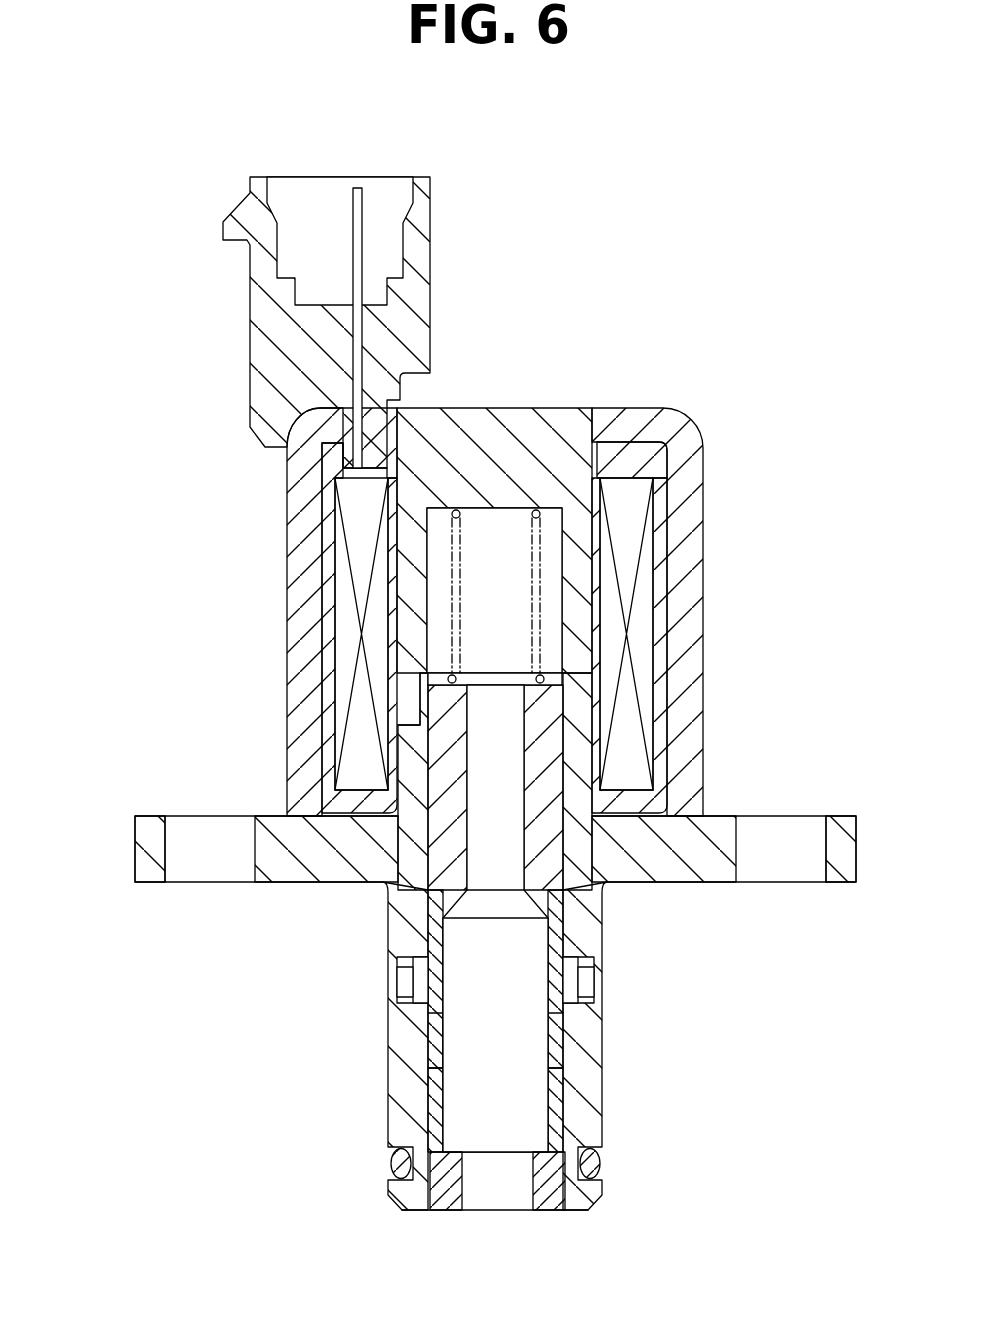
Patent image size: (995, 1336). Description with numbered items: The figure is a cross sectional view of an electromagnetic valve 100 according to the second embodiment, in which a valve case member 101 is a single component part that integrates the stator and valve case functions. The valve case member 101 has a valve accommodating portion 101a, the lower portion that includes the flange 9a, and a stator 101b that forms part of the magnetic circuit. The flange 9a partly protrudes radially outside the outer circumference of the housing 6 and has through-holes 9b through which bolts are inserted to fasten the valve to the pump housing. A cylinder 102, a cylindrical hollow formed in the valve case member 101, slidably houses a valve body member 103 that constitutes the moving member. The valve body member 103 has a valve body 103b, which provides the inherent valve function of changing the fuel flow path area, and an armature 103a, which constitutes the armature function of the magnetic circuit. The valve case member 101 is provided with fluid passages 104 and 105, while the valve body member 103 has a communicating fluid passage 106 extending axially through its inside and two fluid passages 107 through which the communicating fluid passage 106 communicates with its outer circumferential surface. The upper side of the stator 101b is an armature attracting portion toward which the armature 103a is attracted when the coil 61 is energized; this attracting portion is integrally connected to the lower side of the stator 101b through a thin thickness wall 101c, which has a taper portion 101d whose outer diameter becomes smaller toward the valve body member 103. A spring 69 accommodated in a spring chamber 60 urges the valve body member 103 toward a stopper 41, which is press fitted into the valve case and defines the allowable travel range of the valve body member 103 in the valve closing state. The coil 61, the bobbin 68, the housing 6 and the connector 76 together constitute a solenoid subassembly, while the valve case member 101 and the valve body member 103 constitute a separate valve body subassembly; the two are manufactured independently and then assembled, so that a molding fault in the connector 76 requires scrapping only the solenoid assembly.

The electromagnetic valve 100 is at (201, 381).
The connector 76 is at (430, 304).
The stator 101b is at (557, 408).
The bobbin 68 is at (665, 462).
The housing 6 is at (705, 470).
The spring 69 is at (440, 552).
The spring chamber 60 is at (470, 605).
The coil 61 is at (625, 552).
The taper portion 101d is at (576, 665).
The thin thickness wall 101c is at (412, 690).
The armature 103a is at (550, 748).
The flange 9a is at (140, 856).
The through-holes 9b is at (175, 858).
The fluid passage 105 is at (402, 982).
The valve body member 103 is at (560, 870).
The valve case member 101 is at (598, 948).
The fluid passage 104 is at (400, 1014).
The communicating fluid passage 106 is at (532, 993).
The valve body 103b is at (440, 1070).
The fluid passages 107 is at (450, 1058).
The cylinder 102 is at (438, 1103).
The valve accommodating portion 101a is at (602, 1133).
The stopper 41 is at (555, 1208).